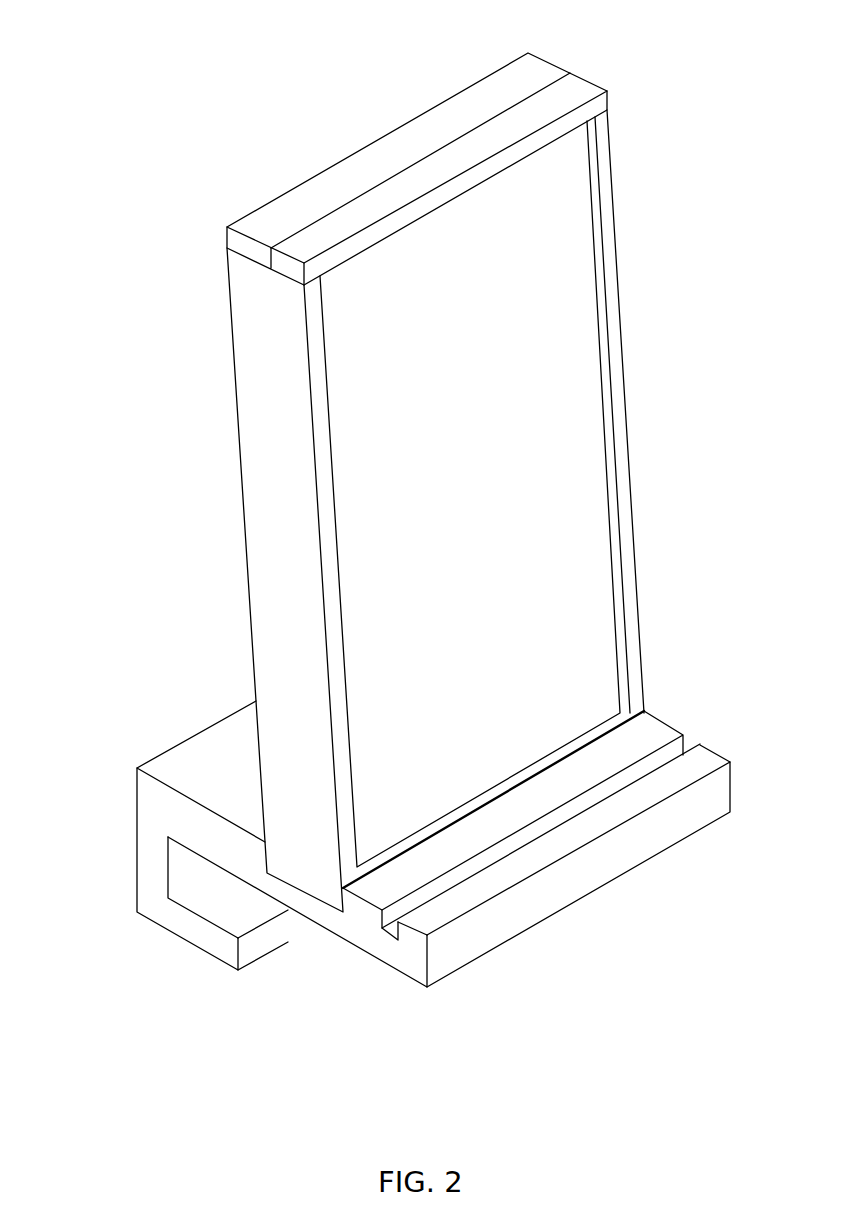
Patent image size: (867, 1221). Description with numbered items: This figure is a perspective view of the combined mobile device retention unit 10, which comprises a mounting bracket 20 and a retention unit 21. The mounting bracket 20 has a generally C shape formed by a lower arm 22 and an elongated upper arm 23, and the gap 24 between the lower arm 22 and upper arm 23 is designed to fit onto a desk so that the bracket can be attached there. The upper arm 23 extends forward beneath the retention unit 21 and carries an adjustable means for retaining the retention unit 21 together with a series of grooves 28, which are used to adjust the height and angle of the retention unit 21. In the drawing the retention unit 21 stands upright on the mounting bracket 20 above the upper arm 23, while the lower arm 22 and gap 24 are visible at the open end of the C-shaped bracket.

The mobile device retention unit 10 is at (122, 133).
The mounting bracket 20 is at (188, 770).
The retention unit 21 is at (562, 563).
The lower arm 22 is at (182, 930).
The elongated upper arm 23 is at (716, 788).
The gap 24 is at (238, 899).
The grooves 28 is at (689, 746).